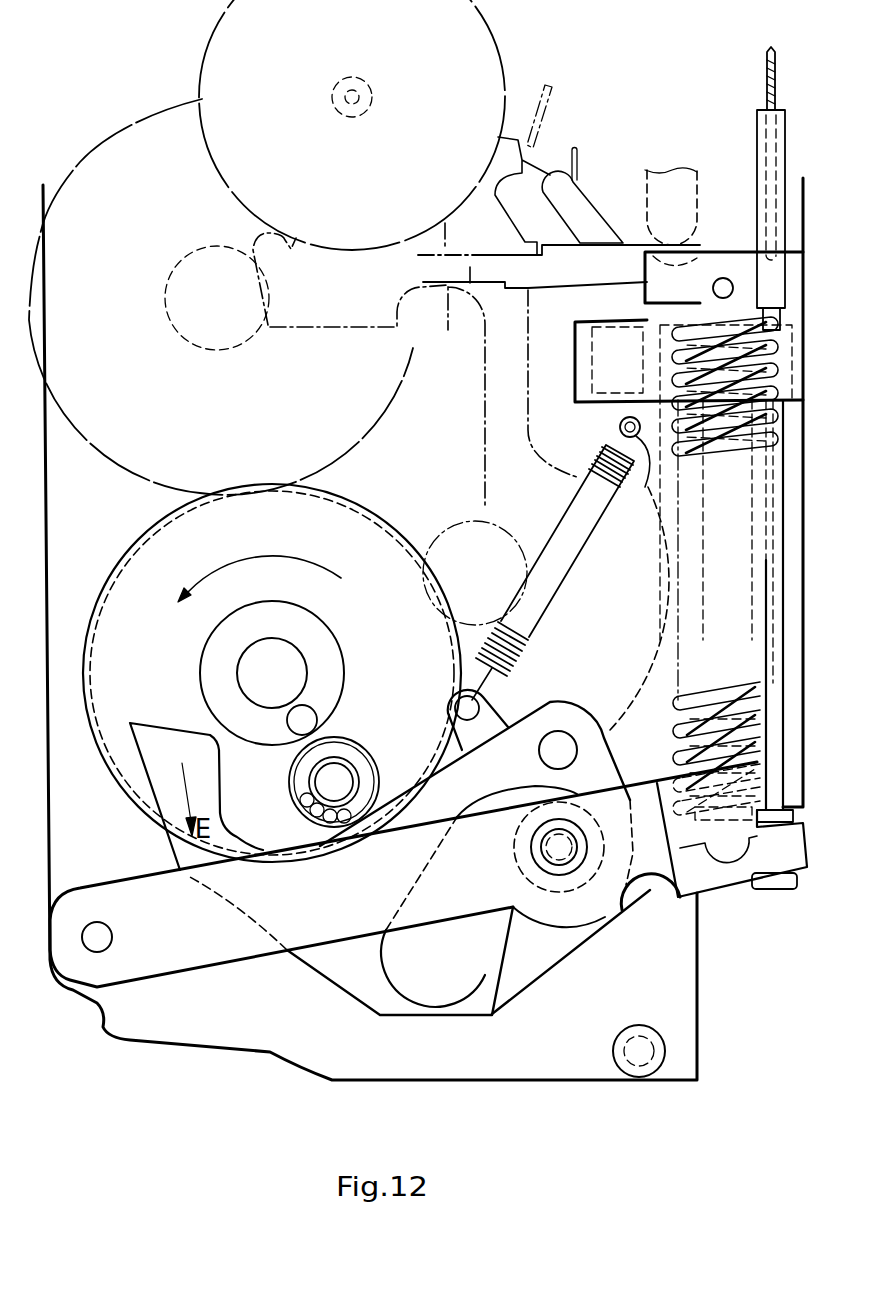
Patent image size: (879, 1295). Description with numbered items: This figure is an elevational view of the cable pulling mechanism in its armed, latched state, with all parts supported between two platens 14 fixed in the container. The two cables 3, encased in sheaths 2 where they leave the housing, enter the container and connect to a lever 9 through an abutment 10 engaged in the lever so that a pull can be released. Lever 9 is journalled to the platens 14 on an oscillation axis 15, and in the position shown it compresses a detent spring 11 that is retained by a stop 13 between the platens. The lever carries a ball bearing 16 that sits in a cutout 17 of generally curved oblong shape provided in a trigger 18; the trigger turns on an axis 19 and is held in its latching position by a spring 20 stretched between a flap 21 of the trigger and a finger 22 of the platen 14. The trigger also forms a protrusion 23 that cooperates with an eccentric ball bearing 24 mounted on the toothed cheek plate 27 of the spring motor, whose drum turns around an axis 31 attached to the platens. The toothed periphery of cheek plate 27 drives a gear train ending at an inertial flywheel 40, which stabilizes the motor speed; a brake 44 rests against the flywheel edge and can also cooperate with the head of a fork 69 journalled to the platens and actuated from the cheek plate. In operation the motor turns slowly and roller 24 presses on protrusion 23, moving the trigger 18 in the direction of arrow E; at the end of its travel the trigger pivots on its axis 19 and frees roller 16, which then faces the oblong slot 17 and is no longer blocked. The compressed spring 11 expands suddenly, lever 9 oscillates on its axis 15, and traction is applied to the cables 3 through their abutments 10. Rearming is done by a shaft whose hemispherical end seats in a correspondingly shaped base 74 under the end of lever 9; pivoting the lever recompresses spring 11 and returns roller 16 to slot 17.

The sheath 2 is at (757, 133).
The cable 3 is at (765, 68).
The lever 9 is at (330, 917).
The abutment 10 is at (787, 889).
The detent spring 11 is at (673, 752).
The stop 13 is at (745, 268).
The platen 14 is at (42, 193).
The oscillation axis 15 is at (97, 938).
The ball bearing 16 is at (597, 920).
The cutout 17 is at (443, 963).
The trigger 18 is at (530, 960).
The axis 19 is at (562, 748).
The spring 20 is at (553, 608).
The flap 21 is at (495, 718).
The finger 22 is at (645, 487).
The protrusion 23 is at (158, 755).
The ball bearing 24 is at (373, 753).
The toothed cheek plate 27 is at (142, 595).
The axis 31 is at (290, 668).
The inertial flywheel 40 is at (475, 78).
The brake 44 is at (473, 272).
The fork 69 is at (503, 403).
The base 74 is at (737, 895).